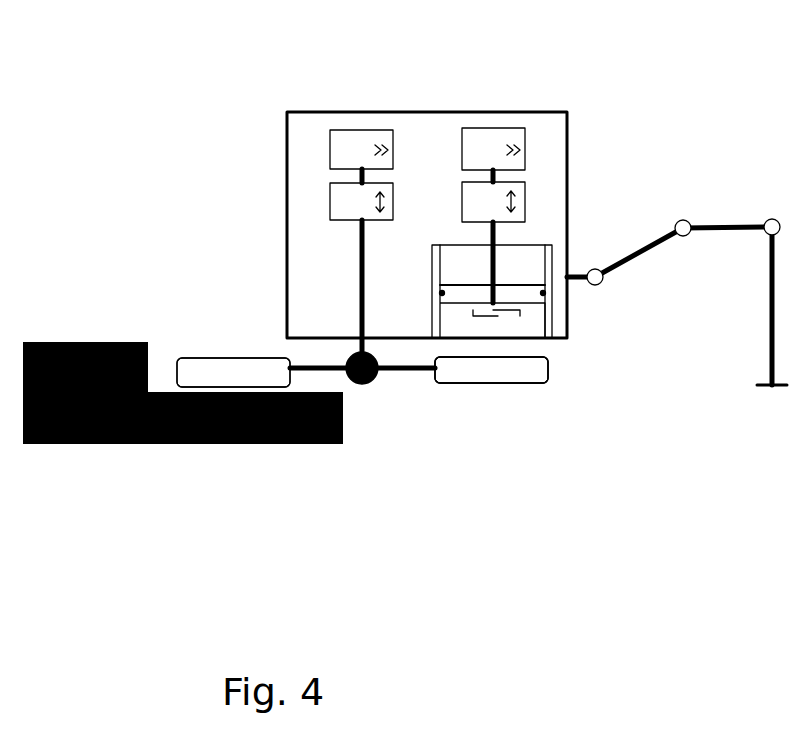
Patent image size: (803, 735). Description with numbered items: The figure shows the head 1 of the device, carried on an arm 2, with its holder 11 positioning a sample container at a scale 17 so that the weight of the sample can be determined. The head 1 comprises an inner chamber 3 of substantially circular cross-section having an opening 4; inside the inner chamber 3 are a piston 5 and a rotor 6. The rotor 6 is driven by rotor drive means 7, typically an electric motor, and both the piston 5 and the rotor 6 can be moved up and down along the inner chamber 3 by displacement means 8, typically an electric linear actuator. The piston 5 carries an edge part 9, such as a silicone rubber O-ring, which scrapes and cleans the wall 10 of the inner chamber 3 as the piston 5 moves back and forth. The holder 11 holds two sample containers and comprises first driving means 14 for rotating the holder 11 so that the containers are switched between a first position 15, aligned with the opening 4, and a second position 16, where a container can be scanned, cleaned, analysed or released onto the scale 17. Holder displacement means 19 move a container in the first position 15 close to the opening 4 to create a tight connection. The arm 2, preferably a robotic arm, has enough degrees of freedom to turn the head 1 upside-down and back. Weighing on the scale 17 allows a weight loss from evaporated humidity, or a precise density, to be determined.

The head 1 is at (552, 125).
The arm 2 is at (737, 212).
The inner chamber 3 is at (528, 258).
The opening 4 is at (538, 338).
The piston 5 is at (525, 295).
The rotor 6 is at (473, 317).
The rotor drive means 7 is at (497, 137).
The displacement means 8 is at (467, 192).
The edge part 9 is at (543, 292).
The wall 10 is at (545, 318).
The holder 11 is at (372, 393).
The first driving means 14 is at (363, 140).
The first position 15 is at (533, 398).
The second position 16 is at (250, 328).
The scale 17 is at (178, 458).
The holder displacement means 19 is at (335, 187).